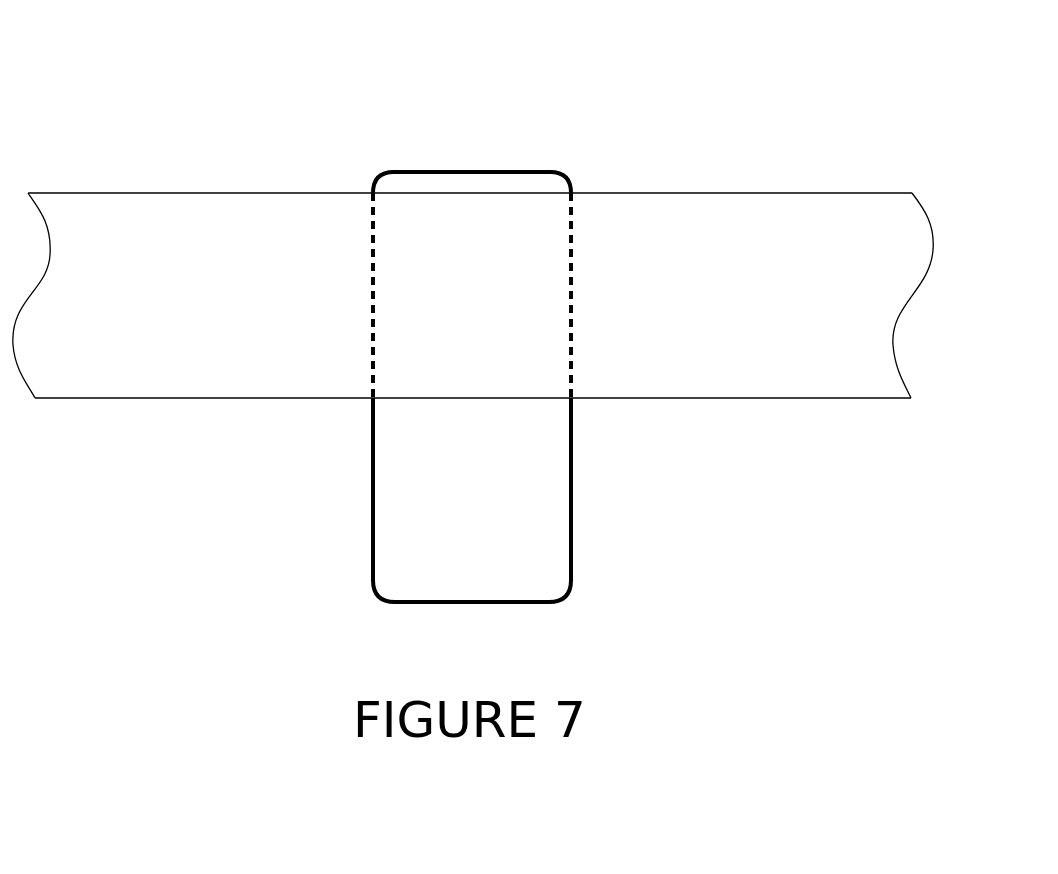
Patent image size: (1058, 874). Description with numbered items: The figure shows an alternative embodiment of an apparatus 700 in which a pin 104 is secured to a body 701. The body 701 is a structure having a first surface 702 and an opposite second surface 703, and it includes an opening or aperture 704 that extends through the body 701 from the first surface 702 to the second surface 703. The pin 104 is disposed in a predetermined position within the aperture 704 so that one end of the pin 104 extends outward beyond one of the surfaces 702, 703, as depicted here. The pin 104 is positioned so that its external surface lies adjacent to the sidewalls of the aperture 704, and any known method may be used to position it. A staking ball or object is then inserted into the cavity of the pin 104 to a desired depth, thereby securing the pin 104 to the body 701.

The apparatus 700 is at (681, 73).
The body 701 is at (818, 205).
The first surface 702 is at (188, 193).
The second surface 703 is at (203, 399).
The aperture 704 is at (372, 192).
The pin 104 is at (573, 488).